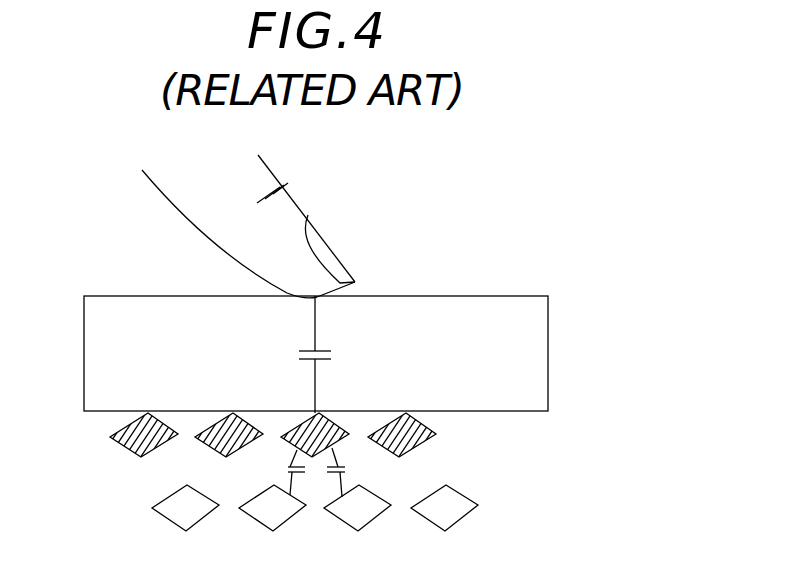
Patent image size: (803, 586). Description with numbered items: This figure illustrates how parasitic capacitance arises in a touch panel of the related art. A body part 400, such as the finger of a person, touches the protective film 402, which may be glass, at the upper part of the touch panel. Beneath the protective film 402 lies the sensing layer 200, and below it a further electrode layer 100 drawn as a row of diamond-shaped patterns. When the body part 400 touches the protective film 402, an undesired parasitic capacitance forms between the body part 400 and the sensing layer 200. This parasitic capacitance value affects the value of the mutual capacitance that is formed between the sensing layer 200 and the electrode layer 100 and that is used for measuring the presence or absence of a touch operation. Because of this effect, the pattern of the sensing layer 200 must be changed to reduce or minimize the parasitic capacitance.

The body part 400 is at (293, 207).
The protective film 402 is at (548, 336).
The sensing layer 200 is at (113, 443).
The ITO1 electrodes 100 is at (152, 505).